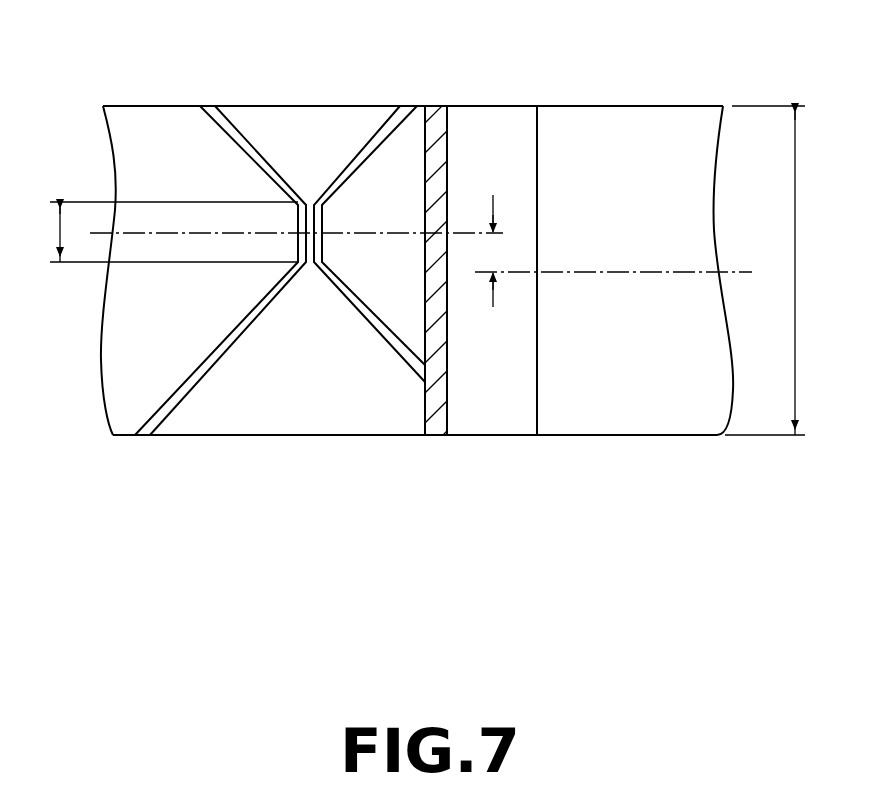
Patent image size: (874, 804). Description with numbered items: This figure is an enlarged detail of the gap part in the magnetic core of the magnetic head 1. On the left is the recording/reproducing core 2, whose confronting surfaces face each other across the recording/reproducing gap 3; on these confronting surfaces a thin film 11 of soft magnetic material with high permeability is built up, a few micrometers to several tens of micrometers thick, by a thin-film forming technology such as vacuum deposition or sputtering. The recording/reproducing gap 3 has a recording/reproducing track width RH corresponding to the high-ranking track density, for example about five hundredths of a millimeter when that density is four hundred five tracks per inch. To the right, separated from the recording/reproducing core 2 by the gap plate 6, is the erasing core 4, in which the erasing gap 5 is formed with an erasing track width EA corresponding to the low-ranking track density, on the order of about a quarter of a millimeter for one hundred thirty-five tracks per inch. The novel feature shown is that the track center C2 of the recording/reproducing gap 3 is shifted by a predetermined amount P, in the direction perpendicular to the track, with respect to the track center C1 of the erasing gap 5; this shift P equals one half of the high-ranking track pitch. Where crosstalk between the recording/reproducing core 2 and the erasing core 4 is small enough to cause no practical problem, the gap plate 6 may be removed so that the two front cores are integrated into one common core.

The magnetic head 1 is at (619, 100).
The recording/reproducing core 2 is at (128, 152).
The recording/reproducing gap 3 is at (310, 215).
The erasing core 4 is at (484, 418).
The erasing gap 5 is at (538, 398).
The gap plate 6 is at (437, 118).
The thin film of soft magnetic material 11 is at (217, 108).
The track center of the erasing gap C1 is at (662, 272).
The track center of the recording/reproducing gap C2 is at (160, 233).
The recording/reproducing track width RH is at (156, 232).
The amount of shift P is at (506, 251).
The erasing track width EA is at (782, 270).